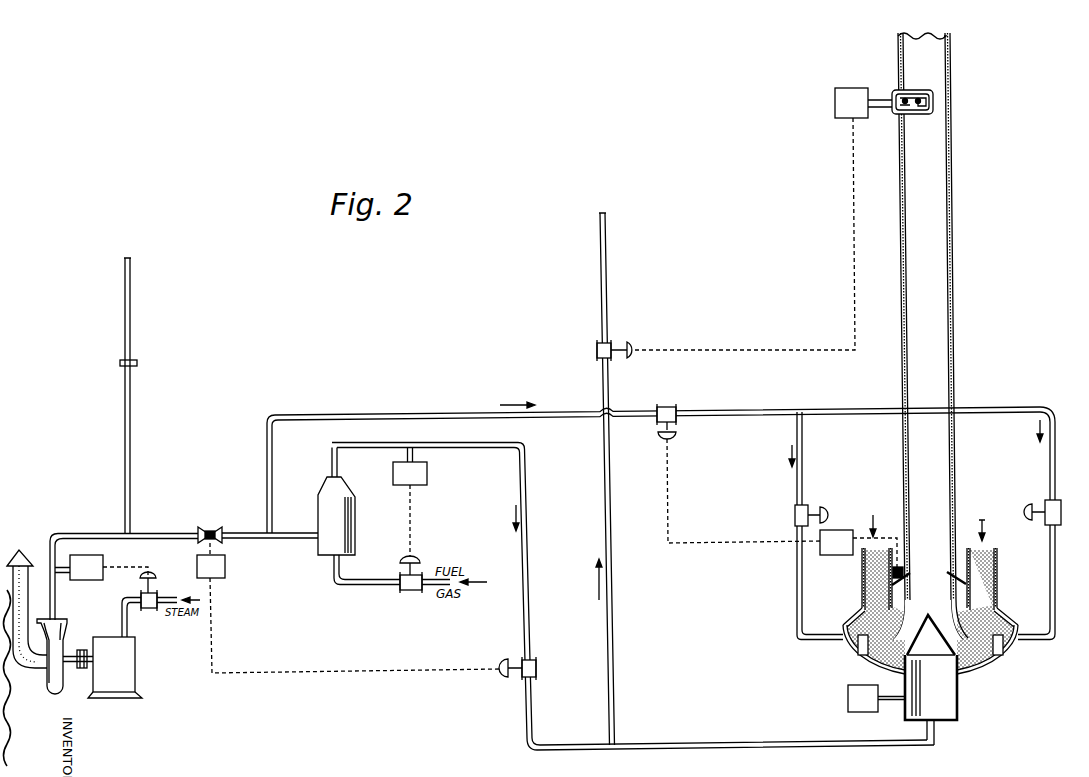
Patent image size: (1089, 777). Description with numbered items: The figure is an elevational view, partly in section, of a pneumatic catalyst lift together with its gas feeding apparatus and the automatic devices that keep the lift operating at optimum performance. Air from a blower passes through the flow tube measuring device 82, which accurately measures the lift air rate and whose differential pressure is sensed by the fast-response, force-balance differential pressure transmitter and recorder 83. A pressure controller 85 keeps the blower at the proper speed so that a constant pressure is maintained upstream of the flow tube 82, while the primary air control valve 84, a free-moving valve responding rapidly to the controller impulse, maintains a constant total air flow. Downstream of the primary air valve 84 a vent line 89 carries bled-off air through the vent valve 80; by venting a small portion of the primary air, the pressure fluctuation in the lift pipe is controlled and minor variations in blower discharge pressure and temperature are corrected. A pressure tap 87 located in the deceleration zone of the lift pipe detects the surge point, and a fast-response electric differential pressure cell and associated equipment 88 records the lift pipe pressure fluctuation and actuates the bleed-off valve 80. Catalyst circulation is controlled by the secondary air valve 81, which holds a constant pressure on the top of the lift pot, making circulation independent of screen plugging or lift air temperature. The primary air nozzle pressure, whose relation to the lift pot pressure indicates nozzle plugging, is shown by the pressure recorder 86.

The vent valve 80 is at (613, 360).
The secondary air valve 81 is at (672, 407).
The flow tube measuring device 82 is at (210, 525).
The differential pressure transmitter and recorder 83 is at (226, 567).
The primary air control valve 84 is at (537, 667).
The pressure controller 85 is at (109, 567).
The pressure recorder 86 is at (847, 698).
The pressure tap 87 is at (893, 112).
The electric differential pressure cell and associated equipment 88 is at (833, 108).
The vent line 89 is at (613, 660).